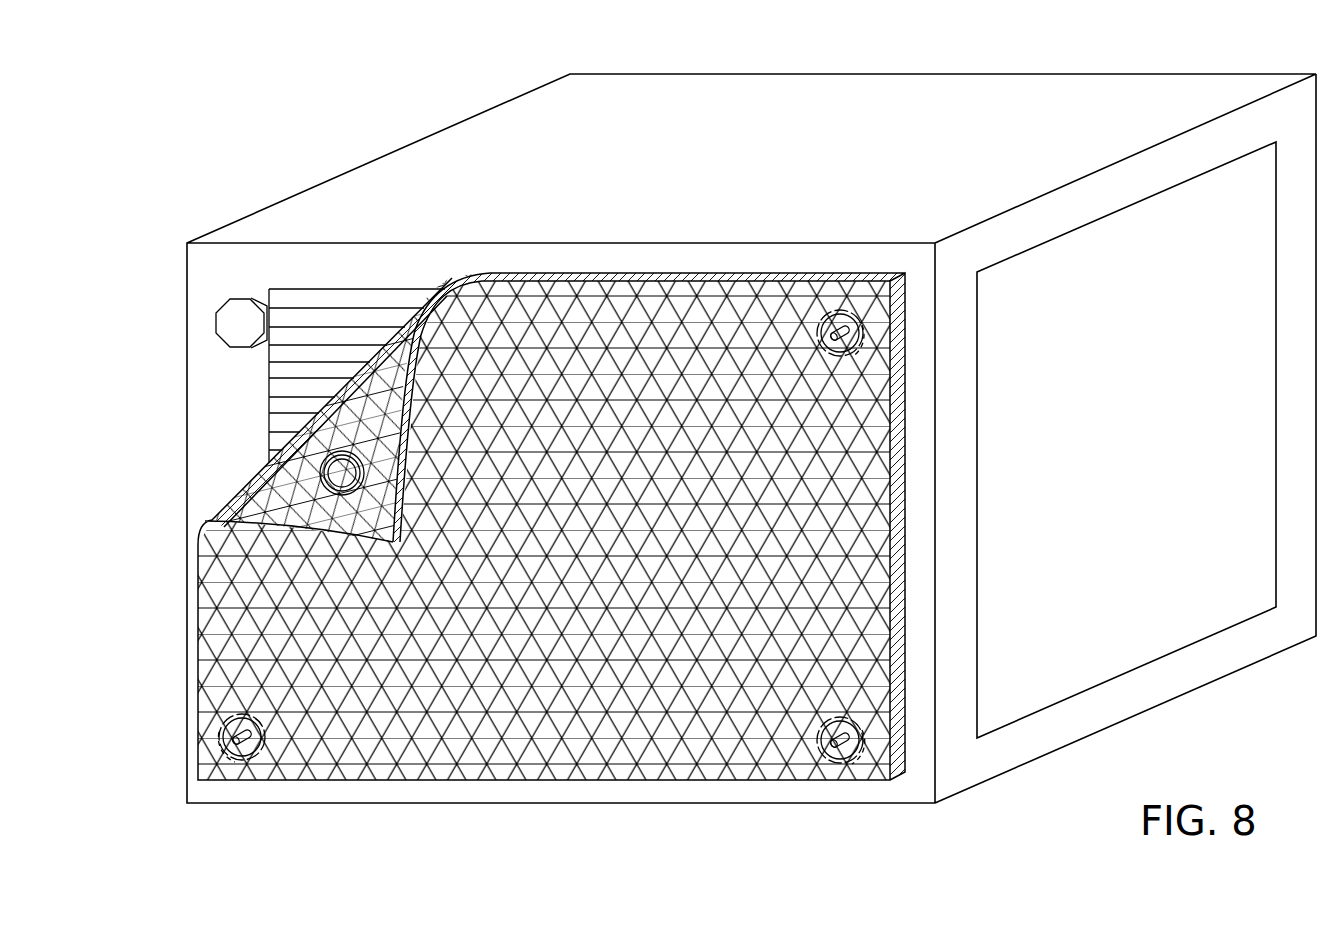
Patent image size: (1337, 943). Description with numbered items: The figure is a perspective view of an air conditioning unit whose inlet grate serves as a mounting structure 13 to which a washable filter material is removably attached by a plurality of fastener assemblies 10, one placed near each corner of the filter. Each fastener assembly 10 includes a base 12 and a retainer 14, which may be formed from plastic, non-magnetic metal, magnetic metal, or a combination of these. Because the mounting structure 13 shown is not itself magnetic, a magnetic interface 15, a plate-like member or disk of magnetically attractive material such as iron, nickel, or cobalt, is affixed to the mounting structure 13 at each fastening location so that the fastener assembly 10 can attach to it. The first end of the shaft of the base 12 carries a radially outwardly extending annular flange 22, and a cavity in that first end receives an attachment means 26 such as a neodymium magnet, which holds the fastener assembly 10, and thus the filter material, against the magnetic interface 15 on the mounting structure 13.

The fastener assembly 10 is at (318, 455).
The base 12 is at (332, 444).
The mounting structure 13 is at (592, 108).
The retainer 14 is at (863, 350).
The magnetic interface 15 is at (229, 297).
The annular flange 22 is at (318, 472).
The attachment means 26 is at (333, 484).